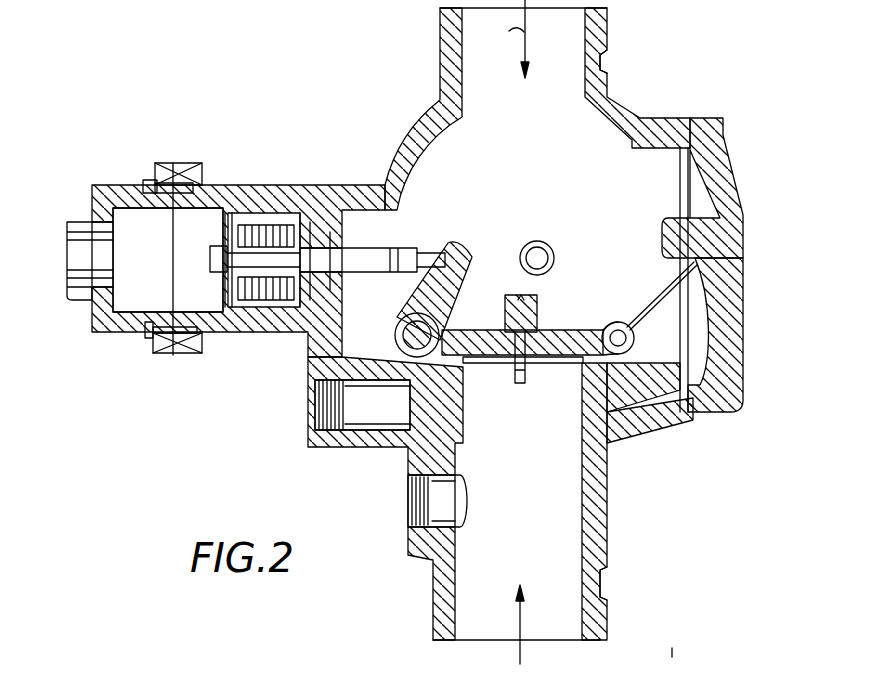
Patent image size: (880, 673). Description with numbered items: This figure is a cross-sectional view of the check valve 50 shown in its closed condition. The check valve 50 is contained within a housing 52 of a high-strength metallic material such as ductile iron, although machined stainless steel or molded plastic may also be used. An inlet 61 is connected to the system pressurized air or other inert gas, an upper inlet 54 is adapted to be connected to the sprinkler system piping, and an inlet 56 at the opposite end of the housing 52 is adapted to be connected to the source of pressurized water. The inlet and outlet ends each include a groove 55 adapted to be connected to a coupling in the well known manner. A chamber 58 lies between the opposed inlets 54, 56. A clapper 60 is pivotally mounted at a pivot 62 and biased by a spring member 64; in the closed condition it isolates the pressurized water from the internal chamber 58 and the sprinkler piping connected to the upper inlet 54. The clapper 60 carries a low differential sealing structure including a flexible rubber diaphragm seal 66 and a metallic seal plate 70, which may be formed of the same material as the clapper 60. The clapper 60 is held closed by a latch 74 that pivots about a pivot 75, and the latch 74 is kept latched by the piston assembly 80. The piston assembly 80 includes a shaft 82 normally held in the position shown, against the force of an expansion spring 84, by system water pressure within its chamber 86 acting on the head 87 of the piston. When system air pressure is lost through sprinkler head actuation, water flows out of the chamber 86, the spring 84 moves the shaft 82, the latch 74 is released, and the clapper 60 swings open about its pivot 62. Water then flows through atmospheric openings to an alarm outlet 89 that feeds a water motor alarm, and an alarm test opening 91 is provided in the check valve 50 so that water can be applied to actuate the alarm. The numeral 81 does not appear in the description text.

The check valve 50 is at (701, 87).
The housing 52 is at (719, 191).
The upper inlet 54 is at (733, 672).
The groove 55 is at (604, 62).
The inlet 56 is at (588, 624).
The chamber 58 is at (536, 163).
The clapper 60 is at (508, 312).
The inlet 61 is at (553, 248).
The pivot 62 is at (690, 350).
The spring member 64 is at (662, 302).
The flexible diaphragm seal 66 is at (537, 333).
The seal plate 70 is at (555, 360).
The latch 74 is at (451, 233).
The pivot 75 is at (398, 333).
The piston assembly 80 is at (186, 148).
The nipple 81 is at (73, 268).
The shaft 82 is at (390, 263).
The expansion spring 84 is at (290, 304).
The chamber 86 is at (148, 302).
The head 87 is at (221, 301).
The alarm outlet 89 is at (297, 432).
The alarm test opening 91 is at (396, 511).